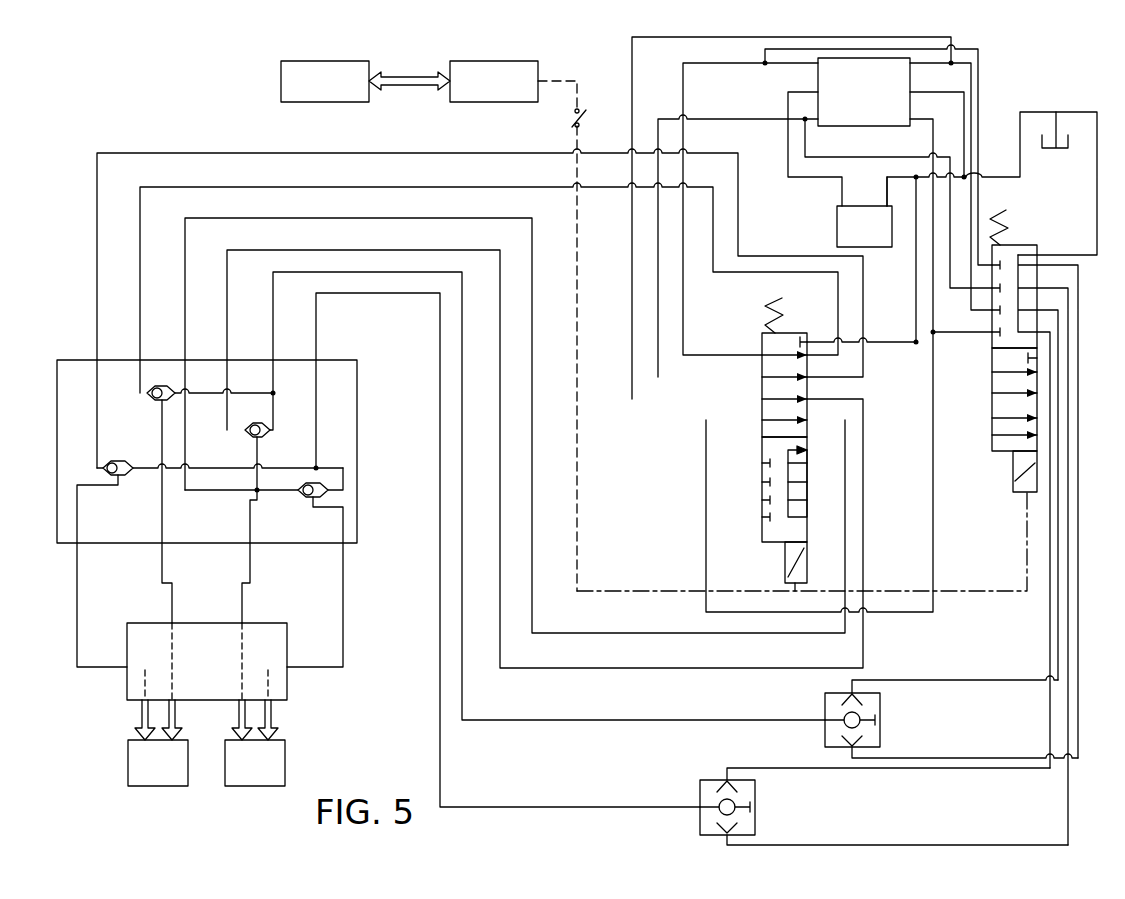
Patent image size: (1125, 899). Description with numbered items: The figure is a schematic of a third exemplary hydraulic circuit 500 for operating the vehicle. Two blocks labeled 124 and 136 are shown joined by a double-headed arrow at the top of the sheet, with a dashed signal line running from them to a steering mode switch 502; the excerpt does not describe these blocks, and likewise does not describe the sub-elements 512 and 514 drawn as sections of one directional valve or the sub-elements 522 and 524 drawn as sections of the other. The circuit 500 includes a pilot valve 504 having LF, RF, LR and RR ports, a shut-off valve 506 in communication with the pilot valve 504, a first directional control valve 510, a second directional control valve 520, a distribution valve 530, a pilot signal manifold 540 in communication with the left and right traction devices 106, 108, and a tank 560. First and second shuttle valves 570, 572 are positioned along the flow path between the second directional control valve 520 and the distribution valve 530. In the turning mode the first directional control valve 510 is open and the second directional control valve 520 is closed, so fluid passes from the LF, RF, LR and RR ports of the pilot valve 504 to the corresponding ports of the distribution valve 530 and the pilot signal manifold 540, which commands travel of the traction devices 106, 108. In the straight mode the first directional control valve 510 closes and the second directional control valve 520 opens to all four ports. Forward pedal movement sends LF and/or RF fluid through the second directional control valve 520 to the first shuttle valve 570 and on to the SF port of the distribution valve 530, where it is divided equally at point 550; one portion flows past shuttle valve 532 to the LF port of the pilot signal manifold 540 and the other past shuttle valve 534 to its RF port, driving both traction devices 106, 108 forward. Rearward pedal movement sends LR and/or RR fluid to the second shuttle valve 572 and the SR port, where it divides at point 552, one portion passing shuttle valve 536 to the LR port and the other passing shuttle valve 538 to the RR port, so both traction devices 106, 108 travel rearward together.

The left traction device 106 is at (171, 774).
The right traction device 108 is at (268, 774).
The controller 124 is at (338, 91).
The operator input device 136 is at (507, 91).
The third exemplary hydraulic circuit 500 is at (987, 88).
The steering mode switch 502 is at (583, 114).
The pilot valve 504 is at (876, 102).
The shut-off valve 506 is at (877, 239).
The first directional control valve 510 is at (758, 444).
The first valve section 512 is at (764, 343).
The second valve section 514 is at (768, 443).
The second directional control valve 520 is at (1020, 527).
The first valve position 522 is at (1020, 259).
The solenoid actuator 524 is at (1001, 447).
The distribution valve 530 is at (235, 513).
The shuttle valve 532 is at (152, 400).
The shuttle valve 534 is at (248, 438).
The shuttle valve 536 is at (118, 479).
The shuttle valve 538 is at (305, 498).
The pilot signal manifold 540 is at (216, 675).
The point 550 is at (274, 398).
The point 552 is at (318, 465).
The tank 560 is at (1059, 150).
The first shuttle valve 570 is at (883, 712).
The second shuttle valve 572 is at (758, 798).